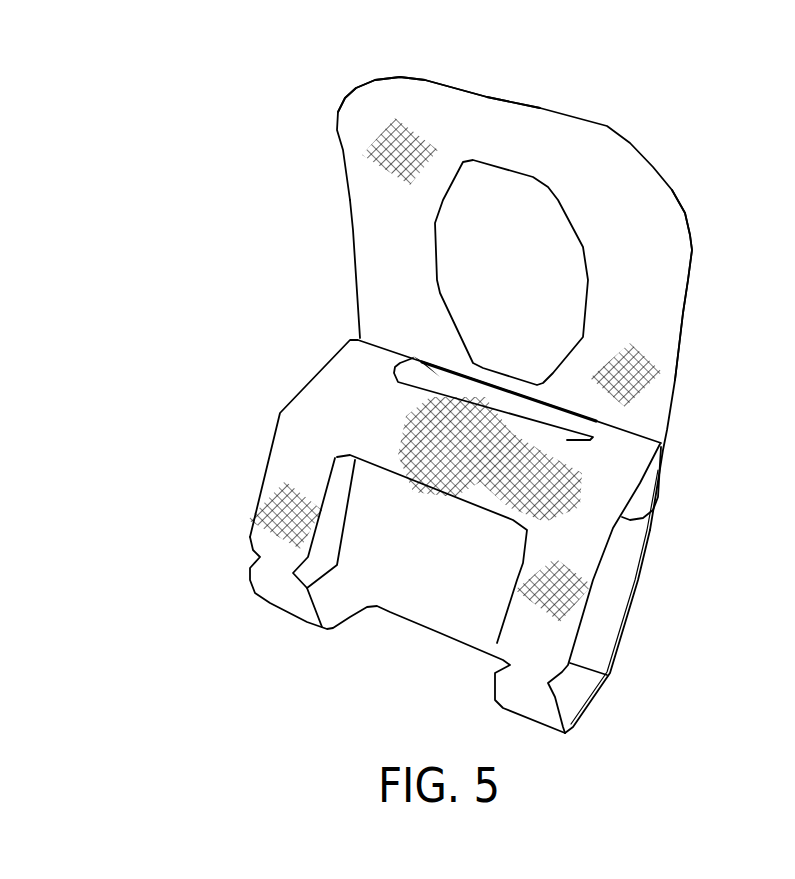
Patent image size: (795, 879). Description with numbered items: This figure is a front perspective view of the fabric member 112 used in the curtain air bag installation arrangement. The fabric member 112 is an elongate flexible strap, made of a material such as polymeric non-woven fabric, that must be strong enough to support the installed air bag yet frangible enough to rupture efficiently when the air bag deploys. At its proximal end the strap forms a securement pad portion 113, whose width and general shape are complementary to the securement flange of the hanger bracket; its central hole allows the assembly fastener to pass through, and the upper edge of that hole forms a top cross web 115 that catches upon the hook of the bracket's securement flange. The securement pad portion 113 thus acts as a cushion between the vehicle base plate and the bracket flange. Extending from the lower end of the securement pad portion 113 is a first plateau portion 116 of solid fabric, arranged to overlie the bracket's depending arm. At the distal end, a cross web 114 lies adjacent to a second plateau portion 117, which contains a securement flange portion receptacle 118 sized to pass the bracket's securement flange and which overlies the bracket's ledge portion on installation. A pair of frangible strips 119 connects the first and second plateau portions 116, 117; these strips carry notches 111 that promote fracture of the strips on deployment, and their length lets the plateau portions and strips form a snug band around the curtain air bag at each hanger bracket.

The notches 111 is at (232, 553).
The fabric member 112 is at (542, 94).
The securement pad portion 113 is at (638, 283).
The cross web 114 is at (643, 490).
The top cross web 115 is at (482, 117).
The first plateau portion 116 is at (618, 568).
The second plateau portion 117 is at (347, 400).
The securement flange portion receptacle 118 is at (355, 330).
The frangible strips 119 is at (303, 472).